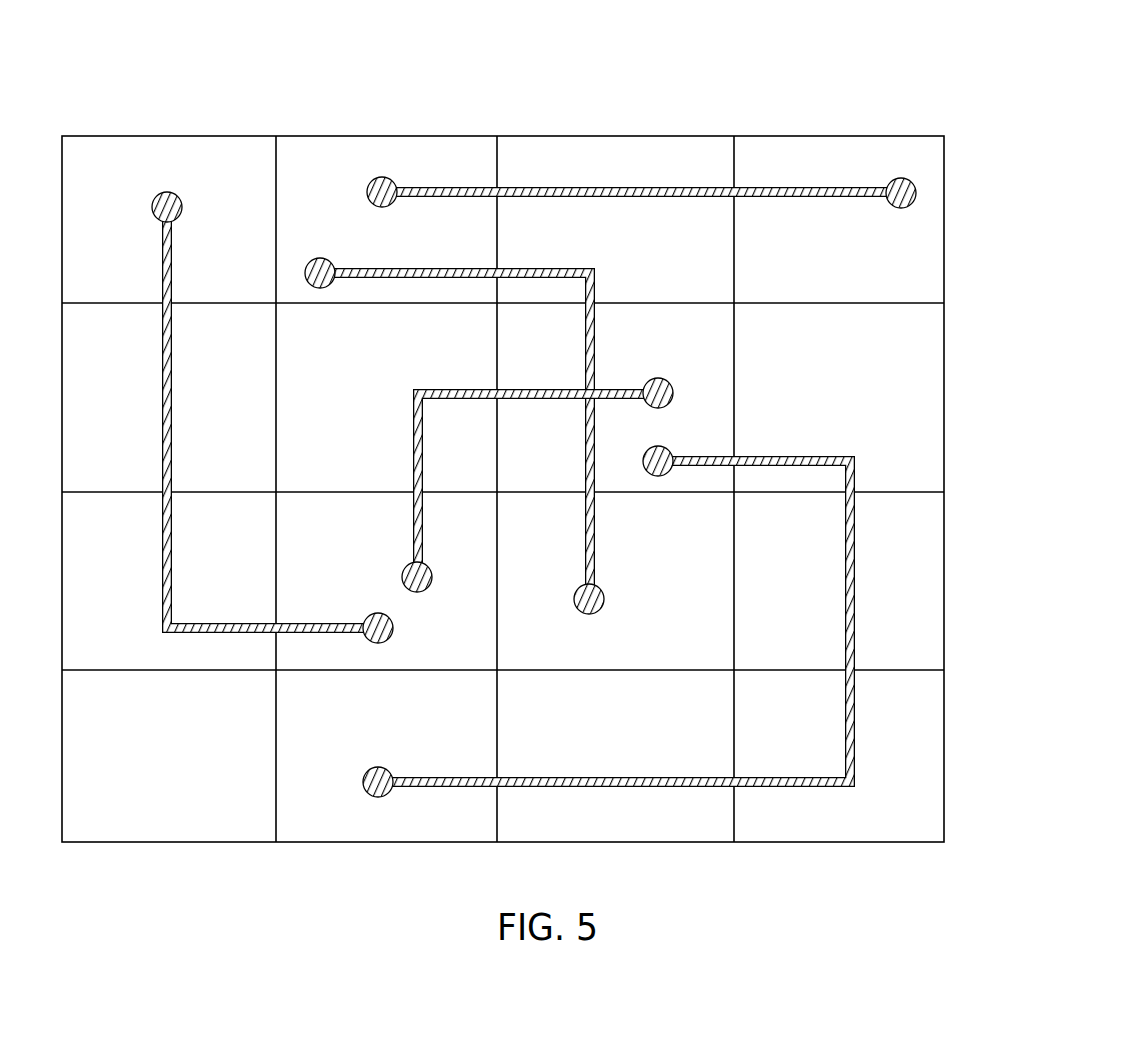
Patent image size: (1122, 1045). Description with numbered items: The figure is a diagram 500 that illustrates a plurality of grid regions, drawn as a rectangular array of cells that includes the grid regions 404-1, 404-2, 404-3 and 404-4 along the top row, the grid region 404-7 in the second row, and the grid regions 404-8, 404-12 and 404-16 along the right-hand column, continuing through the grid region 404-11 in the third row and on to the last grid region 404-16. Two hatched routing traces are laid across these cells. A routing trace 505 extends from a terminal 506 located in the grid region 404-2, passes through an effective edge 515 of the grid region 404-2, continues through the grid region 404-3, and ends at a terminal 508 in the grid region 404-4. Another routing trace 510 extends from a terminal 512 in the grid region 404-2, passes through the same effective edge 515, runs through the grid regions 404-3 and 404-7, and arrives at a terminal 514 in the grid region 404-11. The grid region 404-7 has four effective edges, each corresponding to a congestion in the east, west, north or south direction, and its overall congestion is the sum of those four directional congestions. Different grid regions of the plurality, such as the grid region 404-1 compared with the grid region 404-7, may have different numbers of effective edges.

The diagram 500 is at (1040, 80).
The grid region 404-1 is at (150, 137).
The grid region 404-2 is at (360, 137).
The grid region 404-3 is at (608, 137).
The grid region 404-4 is at (825, 137).
The grid region 404-7 is at (710, 382).
The grid region 404-8 is at (944, 403).
The grid region 404-11 is at (532, 648).
The grid region 404-12 is at (944, 590).
The grid region 404-16 is at (944, 758).
The routing trace 505 is at (633, 200).
The terminal 506 is at (370, 207).
The terminal 508 is at (899, 210).
The routing trace 510 is at (595, 353).
The terminal 512 is at (315, 287).
The terminal 514 is at (599, 608).
The effective edge 515 is at (503, 163).